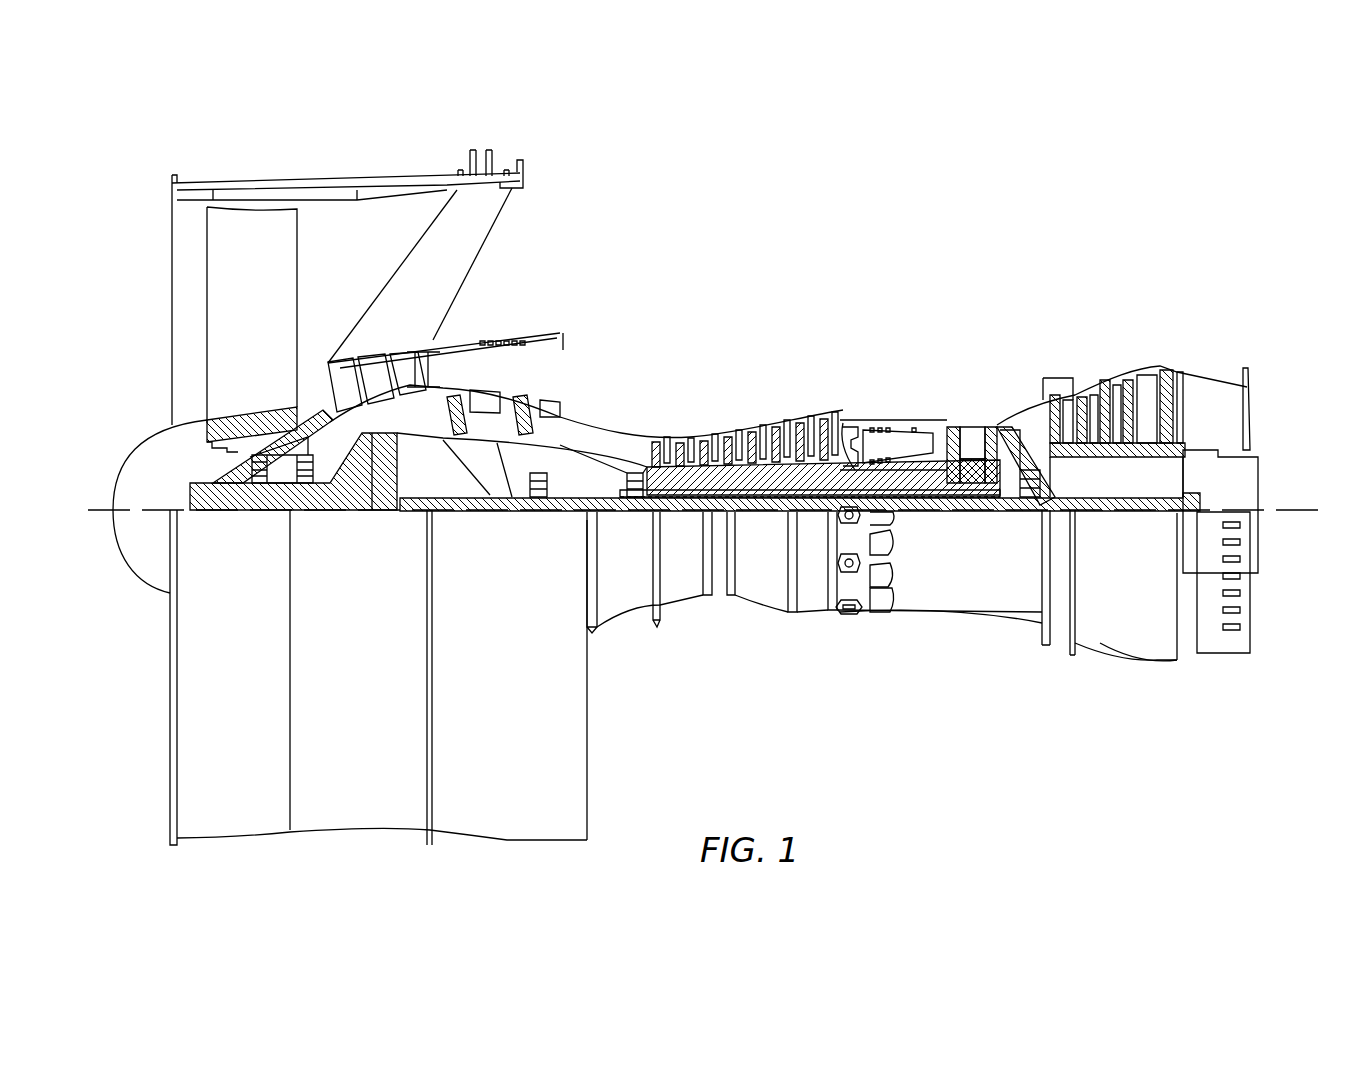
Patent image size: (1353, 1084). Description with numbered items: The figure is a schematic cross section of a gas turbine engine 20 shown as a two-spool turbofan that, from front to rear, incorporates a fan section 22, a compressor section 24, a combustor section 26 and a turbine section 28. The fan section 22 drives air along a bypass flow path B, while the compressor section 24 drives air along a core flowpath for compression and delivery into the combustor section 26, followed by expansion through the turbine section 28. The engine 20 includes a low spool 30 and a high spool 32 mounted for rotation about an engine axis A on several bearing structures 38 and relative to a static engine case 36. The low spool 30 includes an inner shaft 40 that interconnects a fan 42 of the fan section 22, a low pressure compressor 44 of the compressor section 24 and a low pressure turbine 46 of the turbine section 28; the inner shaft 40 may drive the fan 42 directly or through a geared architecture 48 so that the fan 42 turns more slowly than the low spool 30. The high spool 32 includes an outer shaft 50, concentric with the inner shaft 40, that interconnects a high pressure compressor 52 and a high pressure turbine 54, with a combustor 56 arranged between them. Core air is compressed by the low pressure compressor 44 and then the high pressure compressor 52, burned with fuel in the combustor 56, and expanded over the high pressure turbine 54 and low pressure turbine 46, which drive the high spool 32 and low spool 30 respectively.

The gas turbine engine 20 is at (930, 222).
The fan section 22 is at (425, 160).
The compressor section 24 is at (440, 313).
The combustor section 26 is at (950, 313).
The turbine section 28 is at (1185, 313).
The low spool 30 is at (767, 512).
The high spool 32 is at (808, 470).
The static engine case 36 is at (815, 605).
The bearing structures 38 is at (315, 525).
The inner shaft 40 is at (682, 512).
The fan 42 is at (258, 338).
The low pressure compressor 44 is at (512, 402).
The low pressure turbine 46 is at (1110, 385).
The geared architecture 48 is at (385, 487).
The outer shaft 50 is at (897, 503).
The high pressure compressor 52 is at (757, 470).
The high pressure turbine 54 is at (972, 425).
The combustor 56 is at (893, 442).
The engine axis A is at (1296, 502).
The bypass flow path B is at (372, 268).